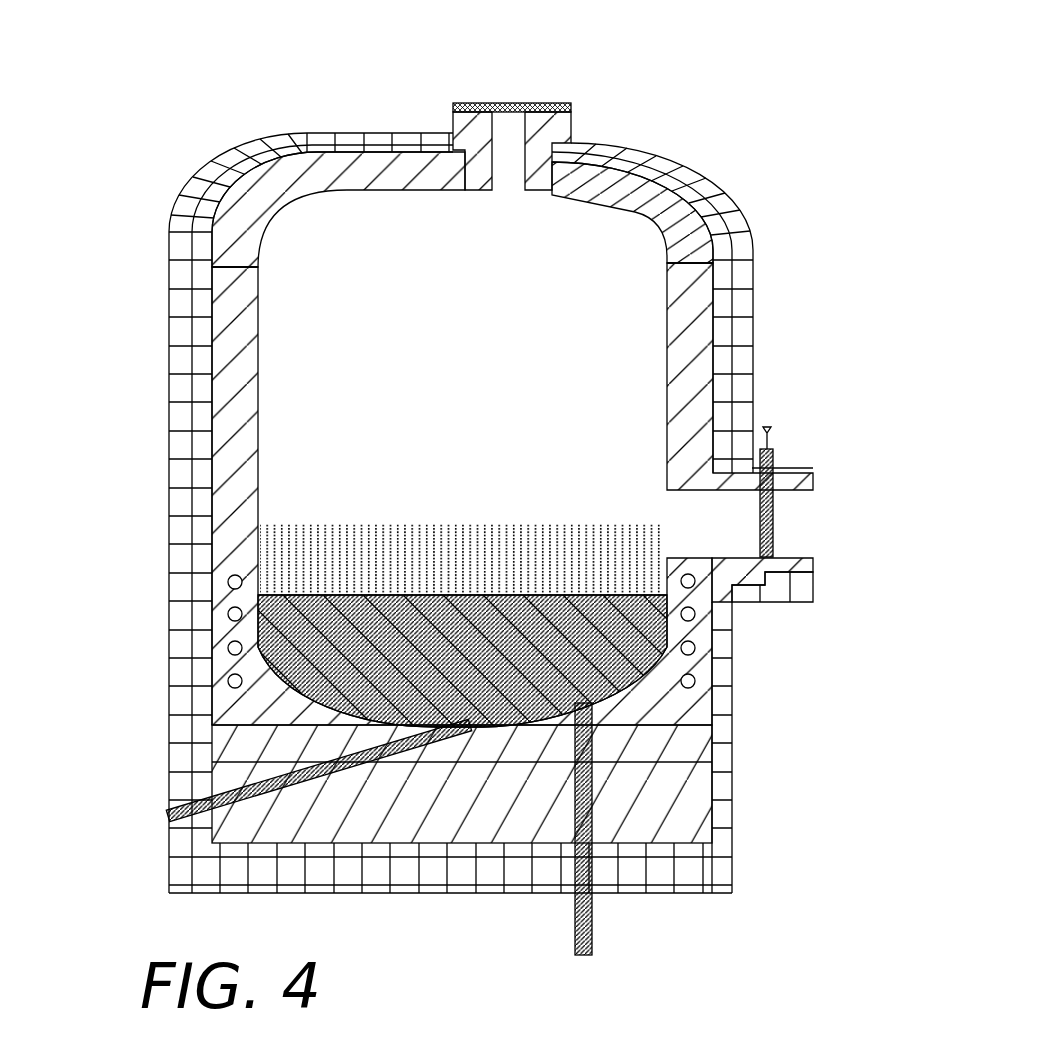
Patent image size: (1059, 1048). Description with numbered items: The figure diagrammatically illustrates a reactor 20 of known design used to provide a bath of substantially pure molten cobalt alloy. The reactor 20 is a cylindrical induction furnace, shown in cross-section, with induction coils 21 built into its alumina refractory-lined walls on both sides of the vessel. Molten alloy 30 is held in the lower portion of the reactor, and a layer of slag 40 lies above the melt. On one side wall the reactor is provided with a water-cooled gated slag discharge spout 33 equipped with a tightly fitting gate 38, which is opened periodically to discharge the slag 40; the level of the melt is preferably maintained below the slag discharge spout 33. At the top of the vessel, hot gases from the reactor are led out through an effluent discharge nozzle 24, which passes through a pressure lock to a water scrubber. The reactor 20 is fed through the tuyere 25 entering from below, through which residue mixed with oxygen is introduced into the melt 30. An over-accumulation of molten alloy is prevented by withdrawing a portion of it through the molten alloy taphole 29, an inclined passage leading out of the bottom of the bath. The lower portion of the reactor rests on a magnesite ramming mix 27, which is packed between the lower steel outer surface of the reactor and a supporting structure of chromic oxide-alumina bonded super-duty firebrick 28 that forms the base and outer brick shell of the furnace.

The reactor 20 is at (170, 497).
The induction coils 21 is at (228, 681).
The effluent discharge nozzle 24 is at (525, 101).
The tuyere 25 is at (592, 920).
The magnesite ramming mix 27 is at (298, 718).
The super-duty firebrick 28 is at (687, 882).
The molten alloy taphole 29 is at (173, 824).
The molten alloy 30 is at (500, 668).
The slag discharge spout 33 is at (813, 566).
The gate 38 is at (773, 527).
The slag 40 is at (305, 558).